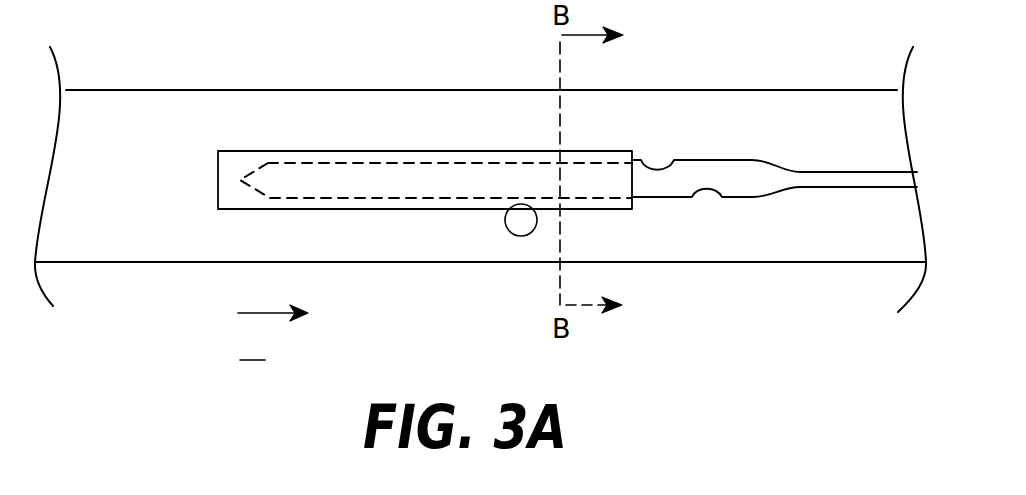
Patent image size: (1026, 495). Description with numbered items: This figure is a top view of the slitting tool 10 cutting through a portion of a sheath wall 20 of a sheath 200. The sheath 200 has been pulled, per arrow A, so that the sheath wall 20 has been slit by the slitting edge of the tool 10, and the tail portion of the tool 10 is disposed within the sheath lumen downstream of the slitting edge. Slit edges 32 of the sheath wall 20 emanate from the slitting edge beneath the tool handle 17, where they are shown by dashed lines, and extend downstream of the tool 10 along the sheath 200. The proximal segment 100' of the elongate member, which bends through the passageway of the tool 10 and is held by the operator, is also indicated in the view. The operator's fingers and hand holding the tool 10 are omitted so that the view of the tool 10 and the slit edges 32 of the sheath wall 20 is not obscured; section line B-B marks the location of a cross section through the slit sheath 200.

The sheath wall 20 is at (115, 134).
The sheath 200 is at (128, 292).
The handle 17 is at (233, 168).
The slitting tool 10 is at (388, 120).
The slit edges 32 is at (676, 162).
The proximal segment 100' is at (484, 274).